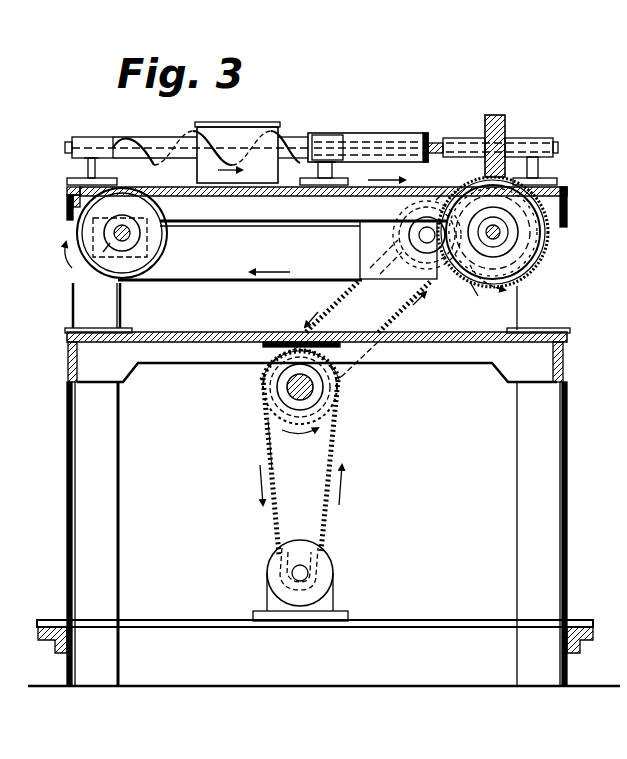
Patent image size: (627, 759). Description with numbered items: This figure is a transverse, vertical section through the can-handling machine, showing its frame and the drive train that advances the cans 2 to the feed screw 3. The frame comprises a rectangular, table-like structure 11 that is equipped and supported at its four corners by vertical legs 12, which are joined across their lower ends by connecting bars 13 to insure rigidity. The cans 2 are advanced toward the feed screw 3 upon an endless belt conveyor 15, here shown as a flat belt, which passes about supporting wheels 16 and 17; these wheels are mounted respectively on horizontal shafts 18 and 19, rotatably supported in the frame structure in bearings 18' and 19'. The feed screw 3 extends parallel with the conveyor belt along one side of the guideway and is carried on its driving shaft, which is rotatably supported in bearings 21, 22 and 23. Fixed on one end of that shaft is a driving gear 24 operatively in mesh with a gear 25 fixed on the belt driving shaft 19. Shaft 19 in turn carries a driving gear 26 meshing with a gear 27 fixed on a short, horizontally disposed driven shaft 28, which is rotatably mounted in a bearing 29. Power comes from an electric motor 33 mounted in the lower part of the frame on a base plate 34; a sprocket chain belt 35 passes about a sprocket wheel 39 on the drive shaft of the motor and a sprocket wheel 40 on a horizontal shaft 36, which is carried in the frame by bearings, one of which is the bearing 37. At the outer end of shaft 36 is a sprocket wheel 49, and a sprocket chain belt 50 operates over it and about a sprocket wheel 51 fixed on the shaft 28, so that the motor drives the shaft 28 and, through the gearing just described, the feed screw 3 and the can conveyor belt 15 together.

The cans 2 is at (241, 130).
The feed screw 3 is at (178, 142).
The table-like structure 11 is at (228, 308).
The vertical legs 12 is at (75, 558).
The connecting bars 13 is at (55, 645).
The endless belt conveyor 15 is at (138, 186).
The supporting wheel 16 is at (164, 258).
The supporting wheel 17 is at (456, 284).
The horizontal shaft 18 is at (69, 266).
The bearing 18' is at (62, 281).
The belt driving shaft 19 is at (524, 233).
The bearing 19' is at (537, 244).
The bearing 21 is at (92, 140).
The bearing 22 is at (338, 130).
The bearing 23 is at (535, 138).
The driving gear 24 is at (497, 118).
The gear 25 is at (510, 178).
The driving gear 26 is at (478, 296).
The gear 27 is at (418, 208).
The driven shaft 28 is at (418, 252).
The bearing 29 is at (412, 237).
The electric motor 33 is at (328, 568).
The base plate 34 is at (366, 625).
The sprocket chain belt 35 is at (329, 518).
The horizontal shaft 36 is at (336, 397).
The bearing 37 is at (333, 381).
The sprocket wheel 39 is at (315, 556).
The sprocket wheel 40 is at (336, 418).
The sprocket wheel 49 is at (263, 432).
The sprocket chain belt 50 is at (332, 306).
The sprocket wheel 51 is at (443, 198).